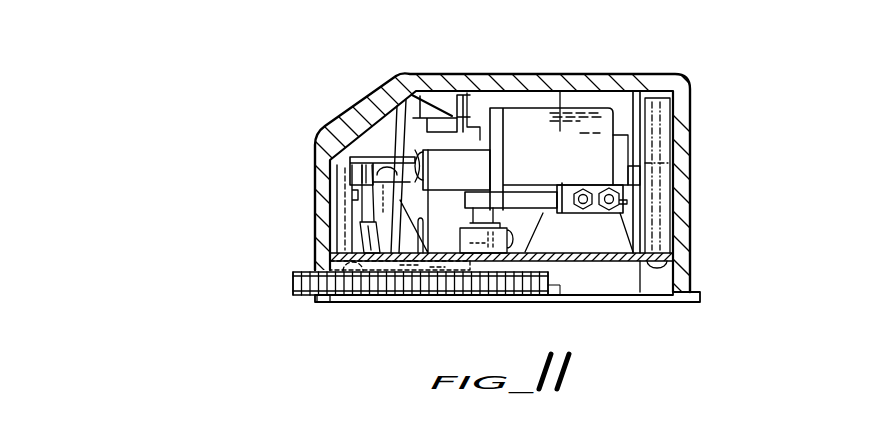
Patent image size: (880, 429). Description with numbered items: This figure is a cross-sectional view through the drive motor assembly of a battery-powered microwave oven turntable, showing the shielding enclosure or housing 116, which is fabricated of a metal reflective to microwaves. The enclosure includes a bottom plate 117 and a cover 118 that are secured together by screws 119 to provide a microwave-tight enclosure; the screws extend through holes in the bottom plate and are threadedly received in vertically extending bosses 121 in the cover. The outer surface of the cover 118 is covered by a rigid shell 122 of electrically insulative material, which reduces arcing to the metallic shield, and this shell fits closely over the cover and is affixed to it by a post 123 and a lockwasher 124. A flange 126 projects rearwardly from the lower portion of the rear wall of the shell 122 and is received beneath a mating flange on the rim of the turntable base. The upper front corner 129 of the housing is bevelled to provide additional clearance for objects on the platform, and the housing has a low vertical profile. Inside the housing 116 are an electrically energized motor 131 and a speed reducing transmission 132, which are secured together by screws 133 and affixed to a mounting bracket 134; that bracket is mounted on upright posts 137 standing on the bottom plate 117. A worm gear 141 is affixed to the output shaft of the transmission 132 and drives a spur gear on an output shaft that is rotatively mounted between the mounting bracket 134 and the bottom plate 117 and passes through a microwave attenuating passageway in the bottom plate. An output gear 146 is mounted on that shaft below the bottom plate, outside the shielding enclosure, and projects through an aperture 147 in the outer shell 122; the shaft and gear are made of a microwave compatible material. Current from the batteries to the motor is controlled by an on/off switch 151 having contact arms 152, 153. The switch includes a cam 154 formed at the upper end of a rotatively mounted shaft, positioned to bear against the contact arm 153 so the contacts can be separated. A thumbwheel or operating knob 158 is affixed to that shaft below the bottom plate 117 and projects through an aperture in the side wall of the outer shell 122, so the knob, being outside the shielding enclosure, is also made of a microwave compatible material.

The shielding enclosure or housing 116 is at (690, 83).
The bottom plate 117 is at (693, 217).
The cover 118 is at (593, 90).
The screws 119 is at (313, 267).
The vertically extending bosses 121 is at (693, 98).
The rigid shell 122 is at (652, 70).
The post 123 is at (442, 113).
The lockwasher 124 is at (403, 73).
The flange 126 is at (696, 300).
The upper front corner 129 is at (343, 120).
The motor 131 is at (570, 72).
The speed reducing transmission 132 is at (477, 140).
The screws 133 is at (510, 297).
The mounting bracket 134 is at (393, 143).
The upright posts 137 is at (355, 212).
The worm gear 141 is at (348, 208).
The output gear 146 is at (385, 287).
The aperture 147 is at (313, 300).
The on/off switch 151 is at (693, 157).
The contact arm 152 is at (523, 200).
The contact arm 153 is at (462, 190).
The cam 154 is at (513, 223).
The thumbwheel or operating knob 158 is at (550, 283).